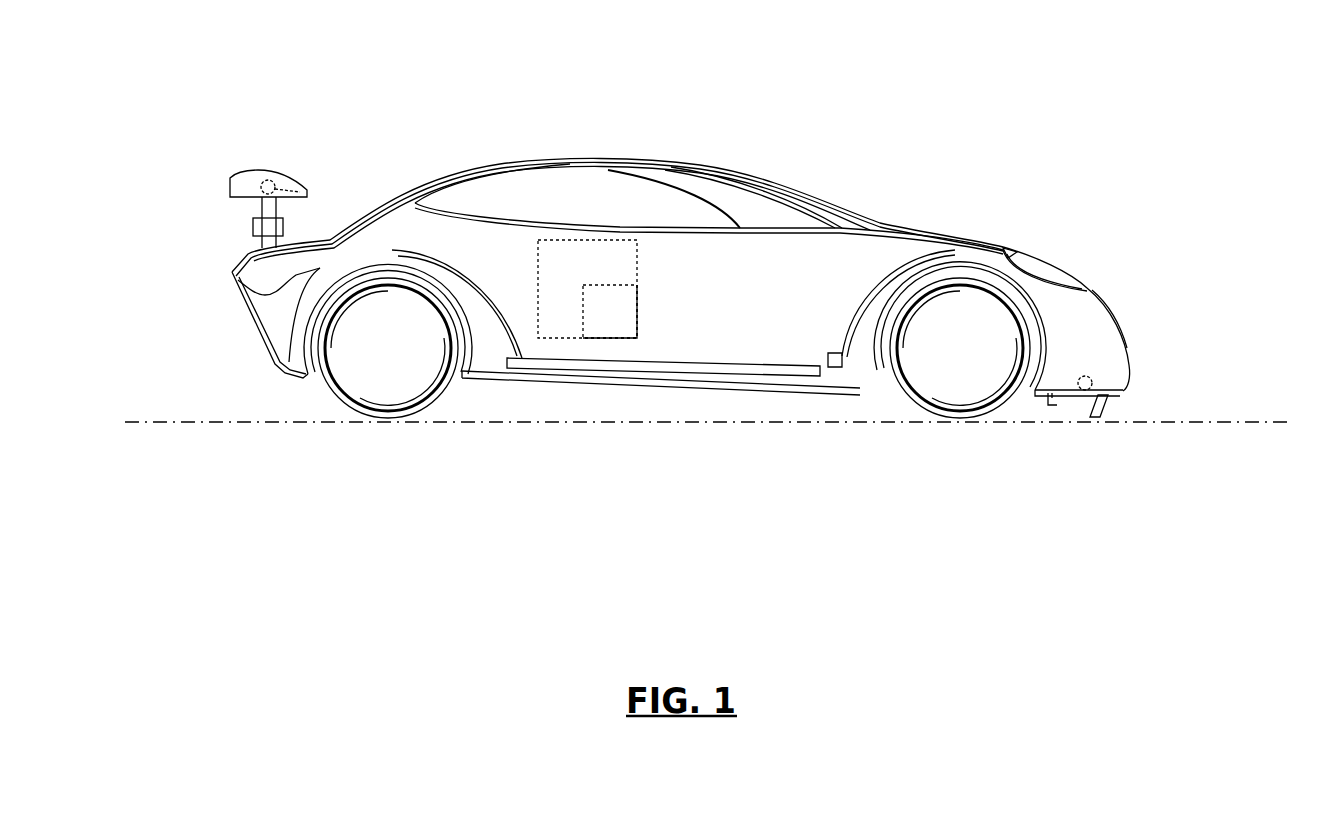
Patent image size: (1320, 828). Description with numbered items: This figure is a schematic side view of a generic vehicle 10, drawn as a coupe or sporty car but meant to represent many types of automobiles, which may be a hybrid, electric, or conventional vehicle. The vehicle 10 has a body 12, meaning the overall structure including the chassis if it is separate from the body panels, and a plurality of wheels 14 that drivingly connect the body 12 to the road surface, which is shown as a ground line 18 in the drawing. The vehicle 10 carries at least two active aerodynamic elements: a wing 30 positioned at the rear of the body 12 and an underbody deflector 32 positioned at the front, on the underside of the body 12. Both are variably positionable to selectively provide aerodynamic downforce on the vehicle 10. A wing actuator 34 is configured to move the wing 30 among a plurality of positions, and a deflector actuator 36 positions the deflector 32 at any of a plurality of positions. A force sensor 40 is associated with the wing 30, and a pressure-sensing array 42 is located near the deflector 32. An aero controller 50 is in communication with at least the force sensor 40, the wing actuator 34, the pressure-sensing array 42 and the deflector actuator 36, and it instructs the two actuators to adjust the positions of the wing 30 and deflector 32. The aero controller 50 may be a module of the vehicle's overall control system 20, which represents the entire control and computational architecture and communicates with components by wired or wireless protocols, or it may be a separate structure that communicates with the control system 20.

The vehicle 10 is at (1046, 80).
The body 12 is at (275, 317).
The wheels 14 is at (382, 393).
The ground surface 18 is at (208, 423).
The control system 20 is at (560, 337).
The wing 30 is at (246, 187).
The deflector 32 is at (1108, 413).
The wing actuator 34 is at (296, 188).
The deflector actuator 36 is at (1081, 376).
The force sensor 40 is at (253, 226).
The pressure-sensing array 42 is at (1048, 430).
The aero controller 50 is at (620, 311).